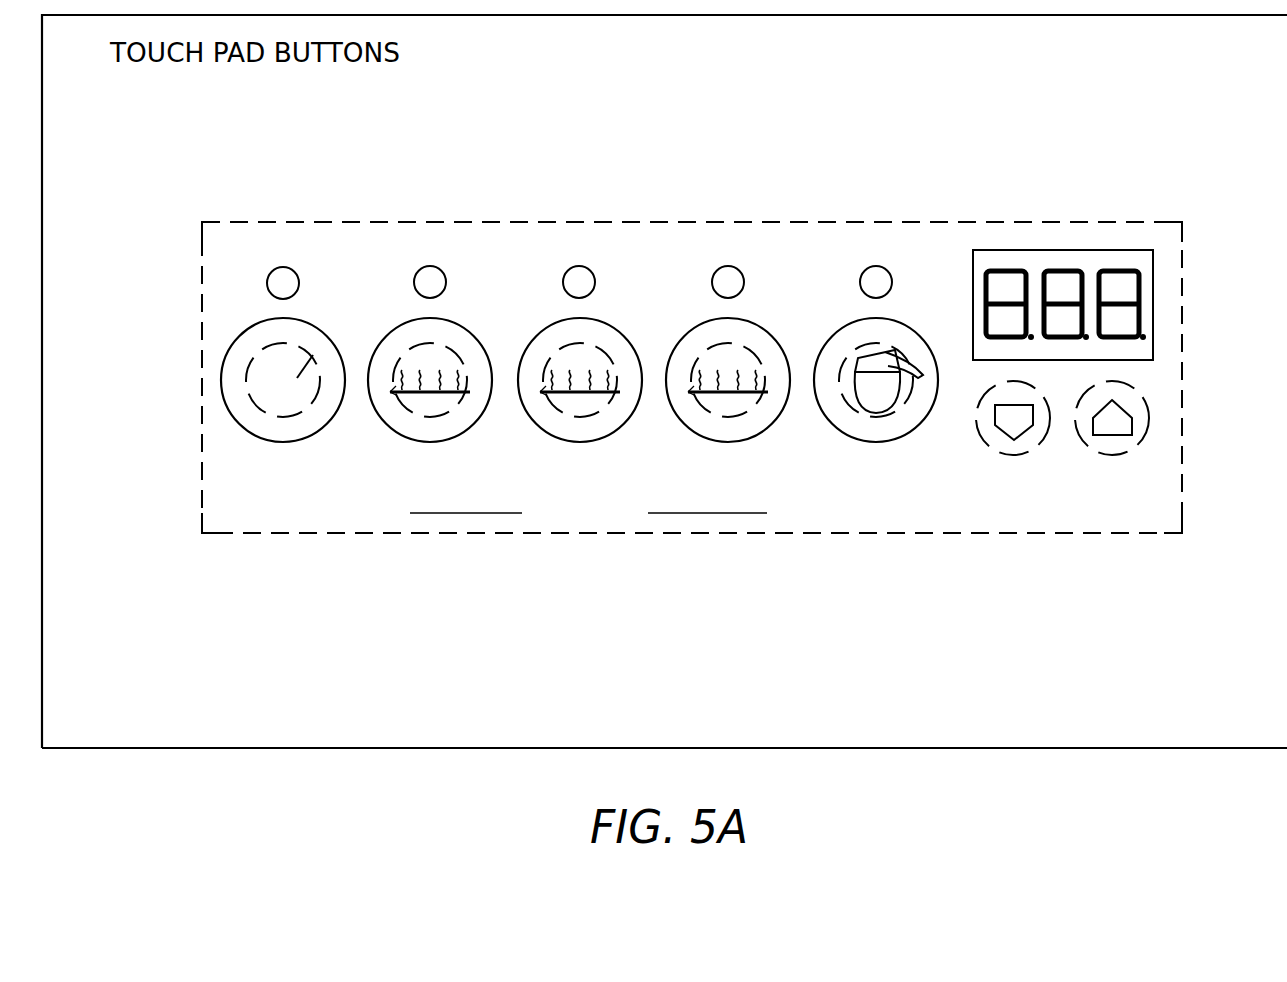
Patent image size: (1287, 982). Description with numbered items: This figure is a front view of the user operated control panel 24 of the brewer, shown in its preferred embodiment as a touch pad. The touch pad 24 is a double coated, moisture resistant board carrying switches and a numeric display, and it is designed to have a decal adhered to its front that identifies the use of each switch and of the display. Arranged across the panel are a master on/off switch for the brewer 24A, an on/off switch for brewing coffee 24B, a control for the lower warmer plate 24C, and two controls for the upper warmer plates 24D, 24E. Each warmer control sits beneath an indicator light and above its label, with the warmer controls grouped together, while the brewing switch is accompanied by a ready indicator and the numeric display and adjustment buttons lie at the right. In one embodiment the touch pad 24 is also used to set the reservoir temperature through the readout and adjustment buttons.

The control panel 24 is at (218, 236).
The master on/off switch 24A is at (290, 432).
The on/off switch for brewing coffee 24B is at (910, 415).
The control for the lower warmer plate 24C is at (463, 417).
The control for the upper warmer plate 24D is at (612, 416).
The control for the upper warmer plate 24E is at (758, 418).